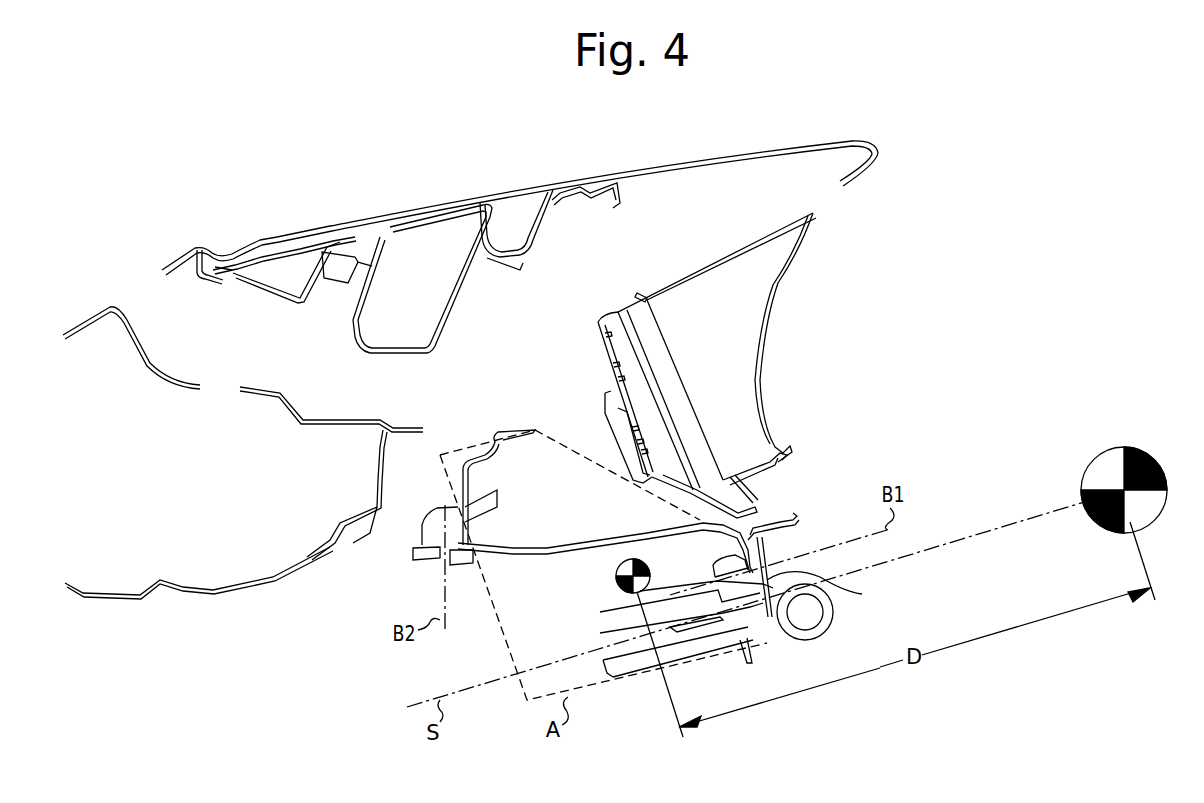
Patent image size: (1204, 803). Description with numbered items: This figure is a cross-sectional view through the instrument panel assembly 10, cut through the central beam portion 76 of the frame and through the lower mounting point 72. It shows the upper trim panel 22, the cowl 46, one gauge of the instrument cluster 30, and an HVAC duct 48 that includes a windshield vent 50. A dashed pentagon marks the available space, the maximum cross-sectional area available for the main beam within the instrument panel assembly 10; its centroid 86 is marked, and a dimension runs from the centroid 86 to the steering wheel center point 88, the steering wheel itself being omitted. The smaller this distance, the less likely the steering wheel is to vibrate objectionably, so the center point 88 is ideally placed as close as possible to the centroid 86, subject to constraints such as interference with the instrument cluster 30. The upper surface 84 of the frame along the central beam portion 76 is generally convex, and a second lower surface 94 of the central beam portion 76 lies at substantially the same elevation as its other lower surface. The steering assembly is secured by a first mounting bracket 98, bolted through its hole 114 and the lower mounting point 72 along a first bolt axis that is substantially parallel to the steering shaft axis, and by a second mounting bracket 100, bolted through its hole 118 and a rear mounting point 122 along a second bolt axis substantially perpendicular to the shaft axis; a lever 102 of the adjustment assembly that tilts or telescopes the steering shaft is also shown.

The instrument panel assembly 10 is at (898, 147).
The upper trim panel 22 is at (770, 146).
The instrument cluster 30 is at (818, 355).
The cowl 46 is at (447, 317).
The HVAC duct 48 is at (302, 560).
The windshield vent 50 is at (220, 382).
The lower mounting point 72 is at (713, 560).
The central beam portion 76 is at (520, 545).
The upper surface 84 is at (614, 540).
The centroid 86 is at (616, 577).
The steering wheel center point 88 is at (1121, 448).
The second lower surface 94 is at (698, 652).
The first mounting bracket 98 is at (800, 513).
The second mounting bracket 100 is at (418, 565).
The lever 102 is at (835, 620).
The hole 114 is at (747, 602).
The hole 118 is at (463, 568).
The rear mounting point 122 is at (422, 530).